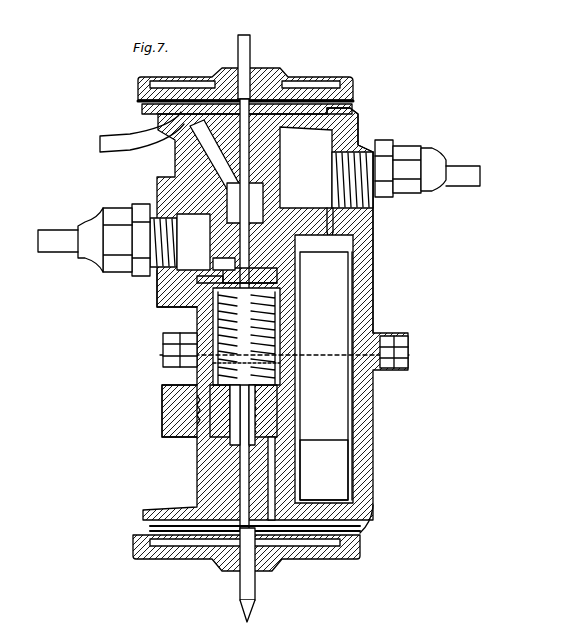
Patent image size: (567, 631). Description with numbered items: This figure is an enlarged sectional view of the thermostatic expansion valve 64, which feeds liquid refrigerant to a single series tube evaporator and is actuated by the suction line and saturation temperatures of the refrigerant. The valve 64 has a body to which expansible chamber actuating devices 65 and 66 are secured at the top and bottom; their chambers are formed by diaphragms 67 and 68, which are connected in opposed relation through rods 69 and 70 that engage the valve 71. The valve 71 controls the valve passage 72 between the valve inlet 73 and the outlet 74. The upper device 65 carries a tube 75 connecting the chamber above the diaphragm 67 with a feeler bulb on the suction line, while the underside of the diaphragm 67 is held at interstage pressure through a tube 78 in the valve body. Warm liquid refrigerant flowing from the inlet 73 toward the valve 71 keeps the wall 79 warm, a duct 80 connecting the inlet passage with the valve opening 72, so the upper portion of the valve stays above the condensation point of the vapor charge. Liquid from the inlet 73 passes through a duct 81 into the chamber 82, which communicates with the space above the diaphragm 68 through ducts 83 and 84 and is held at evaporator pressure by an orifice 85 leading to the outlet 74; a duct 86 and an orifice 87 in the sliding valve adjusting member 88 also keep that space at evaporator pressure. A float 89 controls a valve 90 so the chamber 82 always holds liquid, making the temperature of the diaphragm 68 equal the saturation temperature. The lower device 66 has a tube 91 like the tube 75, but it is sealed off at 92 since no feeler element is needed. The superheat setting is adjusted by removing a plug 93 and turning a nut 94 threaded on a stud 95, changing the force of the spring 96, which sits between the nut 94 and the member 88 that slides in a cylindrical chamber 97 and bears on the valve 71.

The thermostatic expansion valve 64 is at (403, 280).
The expansible chamber actuating device 65 is at (342, 76).
The expansible chamber actuating device 66 is at (358, 543).
The diaphragm 67 is at (295, 100).
The diaphragm 68 is at (315, 535).
The rod 69 is at (262, 195).
The rod 70 is at (247, 475).
The valve 71 is at (177, 290).
The valve passage 72 is at (240, 232).
The valve inlet 73 is at (362, 140).
The outlet 74 is at (176, 242).
The tube 75 is at (250, 52).
The tube 78 is at (125, 140).
The wall 79 is at (350, 112).
The duct 80 is at (207, 160).
The duct 81 is at (334, 222).
The chamber 82 is at (350, 402).
The duct 83 is at (312, 523).
The duct 84 is at (370, 518).
The orifice 85 is at (288, 262).
The duct 86 is at (276, 463).
The orifice 87 is at (282, 288).
The sliding valve adjusting member 88 is at (282, 320).
The float 89 is at (340, 420).
The valve 90 is at (330, 245).
The tube 91 is at (245, 580).
The sealed end 92 is at (246, 618).
The plug 93 is at (163, 407).
The nut 94 is at (222, 410).
The stud 95 is at (260, 428).
The spring 96 is at (207, 320).
The cylindrical chamber 97 is at (280, 363).